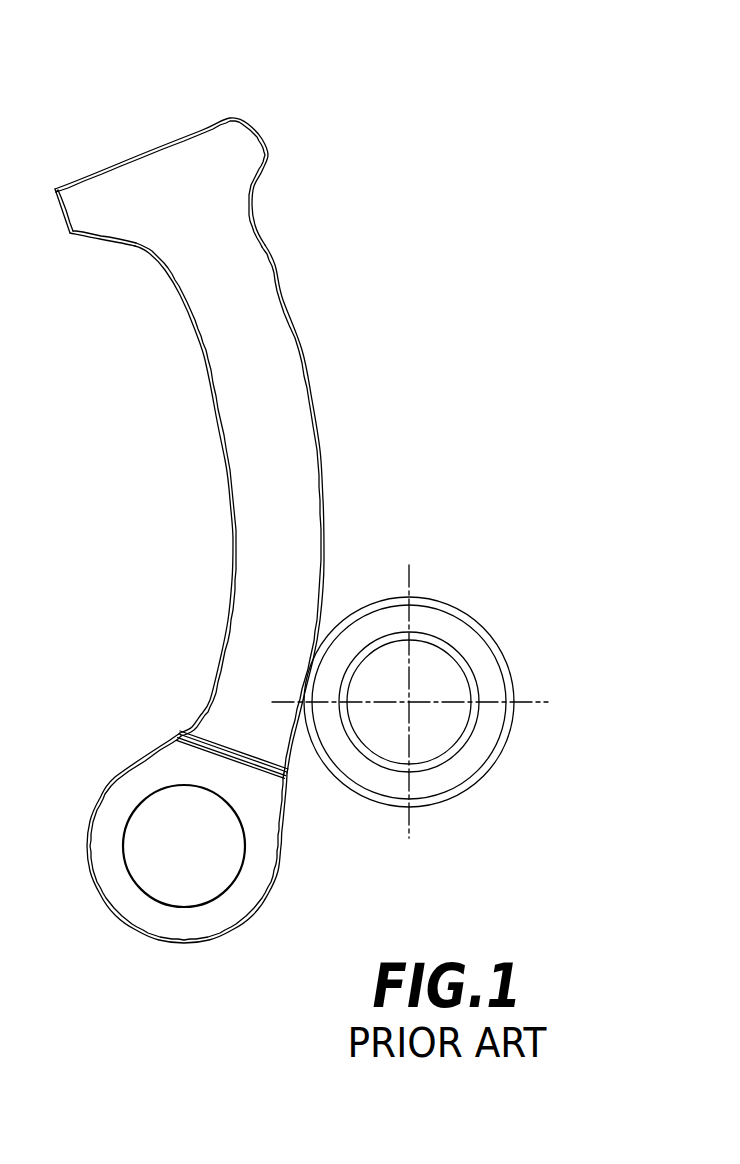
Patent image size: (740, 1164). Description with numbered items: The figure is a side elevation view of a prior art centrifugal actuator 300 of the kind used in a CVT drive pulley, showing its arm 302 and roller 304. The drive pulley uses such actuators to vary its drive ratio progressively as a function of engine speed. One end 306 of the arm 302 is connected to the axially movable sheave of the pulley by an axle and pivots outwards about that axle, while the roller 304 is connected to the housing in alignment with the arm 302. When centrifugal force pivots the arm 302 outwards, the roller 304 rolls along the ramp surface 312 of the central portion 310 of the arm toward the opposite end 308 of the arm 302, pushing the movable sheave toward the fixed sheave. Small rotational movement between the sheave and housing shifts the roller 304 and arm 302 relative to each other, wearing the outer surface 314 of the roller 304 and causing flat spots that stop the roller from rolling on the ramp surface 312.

The centrifugal actuator 300 is at (301, 490).
The arm 302 is at (236, 524).
The roller 304 is at (484, 752).
The end of the arm 306 is at (137, 913).
The end of the arm 308 is at (143, 151).
The central portion of the arm 310 is at (230, 380).
The ramp surface 312 is at (320, 436).
The outer surface of the roller 314 is at (468, 617).